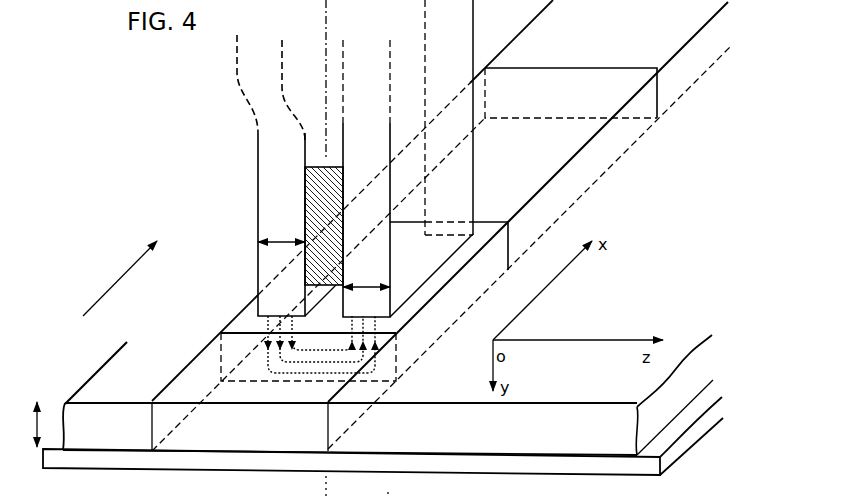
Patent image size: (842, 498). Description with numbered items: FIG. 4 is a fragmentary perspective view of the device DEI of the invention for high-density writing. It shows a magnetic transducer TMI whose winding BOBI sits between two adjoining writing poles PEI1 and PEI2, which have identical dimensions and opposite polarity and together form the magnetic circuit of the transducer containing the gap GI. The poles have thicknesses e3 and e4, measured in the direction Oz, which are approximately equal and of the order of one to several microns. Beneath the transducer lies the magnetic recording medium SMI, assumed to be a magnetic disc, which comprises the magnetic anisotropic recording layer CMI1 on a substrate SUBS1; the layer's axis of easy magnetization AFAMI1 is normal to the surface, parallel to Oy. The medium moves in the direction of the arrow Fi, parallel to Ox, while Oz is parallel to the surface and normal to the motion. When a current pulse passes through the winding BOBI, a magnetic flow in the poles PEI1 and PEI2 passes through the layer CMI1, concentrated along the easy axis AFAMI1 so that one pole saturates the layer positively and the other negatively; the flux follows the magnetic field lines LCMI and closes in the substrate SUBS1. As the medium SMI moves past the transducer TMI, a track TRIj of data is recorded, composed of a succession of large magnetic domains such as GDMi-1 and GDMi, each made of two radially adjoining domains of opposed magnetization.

The device for high-density writing DEI is at (62, 292).
The magnetic transducer TMI is at (240, 110).
The first writing pole PEI1 is at (268, 200).
The winding BOBI is at (308, 204).
The second writing pole PEI2 is at (378, 205).
The thickness of writing pole e4 is at (281, 231).
The thickness of writing pole e3 is at (366, 276).
The large magnetic domain GDMi-1 is at (560, 104).
The large magnetic domain GDMi is at (497, 258).
The track of data TRIj is at (627, 136).
The gap GI is at (248, 313).
The magnetic field lines LCMI is at (380, 320).
The magnetic anisotropic recording layer CMI1 is at (350, 429).
The substrate SUBS1 is at (514, 460).
The magnetic recording medium SMI is at (717, 432).
The axis of easy magnetization AFAMI1 is at (62, 412).
The direction of motion arrow Fi is at (120, 278).